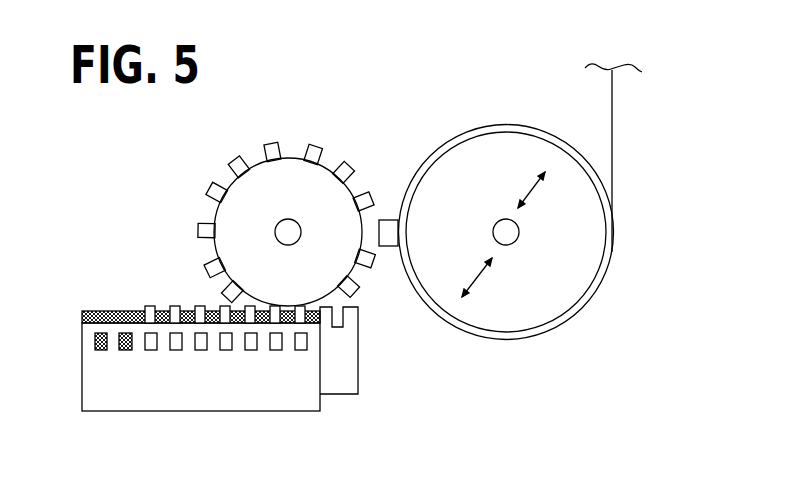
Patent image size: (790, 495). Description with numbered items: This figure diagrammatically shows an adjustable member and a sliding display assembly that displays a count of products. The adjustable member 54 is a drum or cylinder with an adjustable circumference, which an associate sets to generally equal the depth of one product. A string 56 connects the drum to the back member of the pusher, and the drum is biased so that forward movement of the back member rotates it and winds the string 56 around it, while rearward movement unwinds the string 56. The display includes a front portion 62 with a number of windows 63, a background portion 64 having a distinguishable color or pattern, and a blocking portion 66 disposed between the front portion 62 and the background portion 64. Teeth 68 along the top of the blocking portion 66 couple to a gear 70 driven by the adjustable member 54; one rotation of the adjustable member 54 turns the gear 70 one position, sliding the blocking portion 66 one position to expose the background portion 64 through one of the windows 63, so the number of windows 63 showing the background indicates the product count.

The adjustable member 54 is at (590, 283).
The string 56 is at (612, 127).
The front portion 62 is at (257, 398).
The windows 63 is at (98, 352).
The background portion 64 is at (100, 311).
The blocking portion 66 is at (345, 383).
The teeth 68 is at (176, 308).
The gear 70 is at (292, 158).